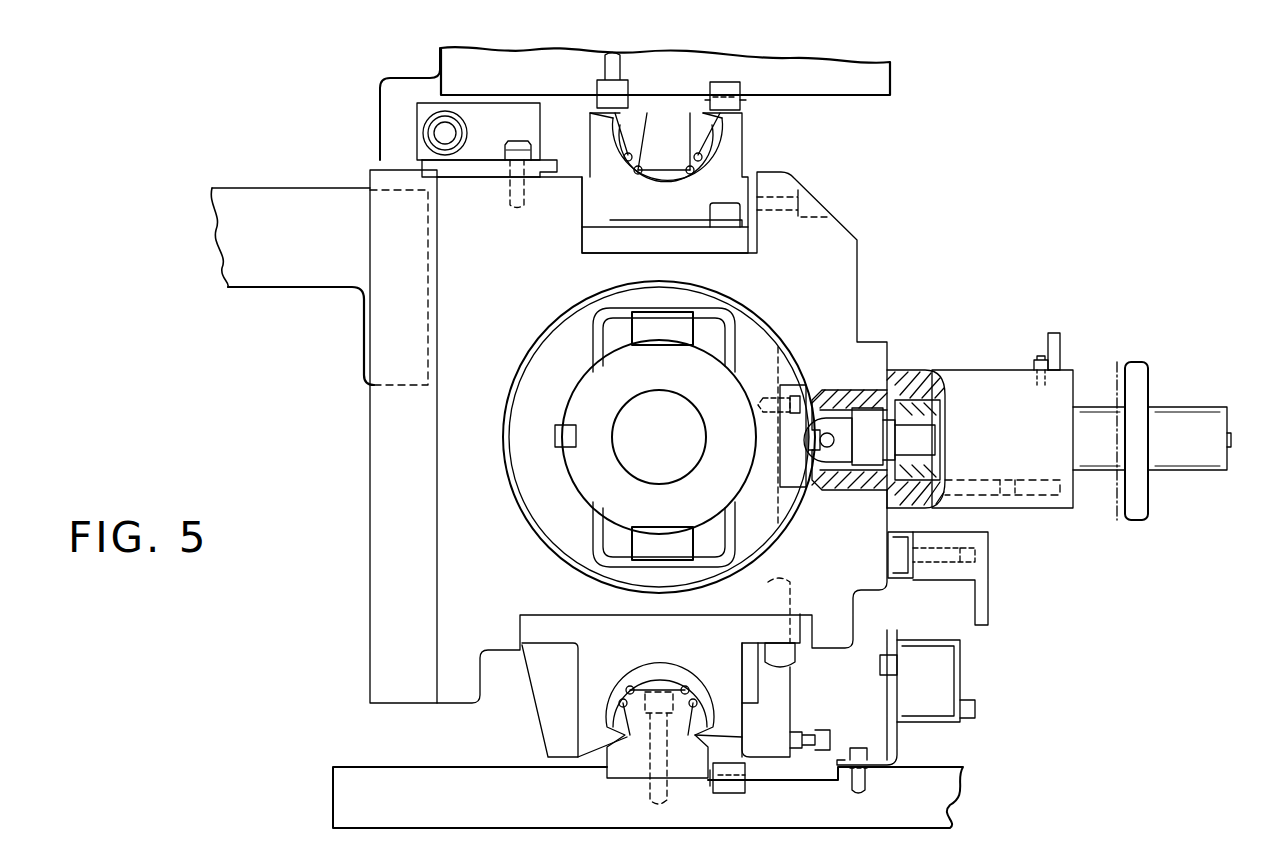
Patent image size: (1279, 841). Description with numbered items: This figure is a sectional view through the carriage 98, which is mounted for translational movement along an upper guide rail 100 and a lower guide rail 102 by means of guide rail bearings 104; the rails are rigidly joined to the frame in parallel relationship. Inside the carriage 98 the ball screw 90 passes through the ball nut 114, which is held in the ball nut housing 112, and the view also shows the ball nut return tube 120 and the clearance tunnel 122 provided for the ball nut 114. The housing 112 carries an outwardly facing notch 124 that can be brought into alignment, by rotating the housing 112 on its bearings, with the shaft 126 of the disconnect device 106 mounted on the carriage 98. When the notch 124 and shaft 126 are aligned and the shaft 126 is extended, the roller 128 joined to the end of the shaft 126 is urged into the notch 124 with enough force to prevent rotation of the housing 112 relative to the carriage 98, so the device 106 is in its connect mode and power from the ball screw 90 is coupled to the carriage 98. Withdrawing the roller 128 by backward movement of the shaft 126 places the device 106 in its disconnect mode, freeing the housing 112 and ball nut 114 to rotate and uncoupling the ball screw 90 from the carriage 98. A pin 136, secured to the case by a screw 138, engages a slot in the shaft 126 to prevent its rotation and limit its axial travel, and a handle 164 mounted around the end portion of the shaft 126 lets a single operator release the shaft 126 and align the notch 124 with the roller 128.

The ball screw 90 is at (622, 462).
The carriage 98 is at (843, 242).
The upper guide rail 100 is at (663, 155).
The lower guide rail 102 is at (633, 770).
The guide rail bearings 104 is at (735, 142).
The disconnect device 106 is at (960, 385).
The ball nut housing 112 is at (767, 462).
The ball nut 114 is at (740, 395).
The ball nut return tube 120 is at (618, 542).
The clearance tunnel 122 is at (598, 330).
The outwardly facing notch 124 is at (808, 448).
The shaft 126 is at (932, 440).
The roller 128 is at (855, 400).
The pin 136 is at (1057, 358).
The screw 138 is at (1040, 356).
The handle 164 is at (1185, 412).